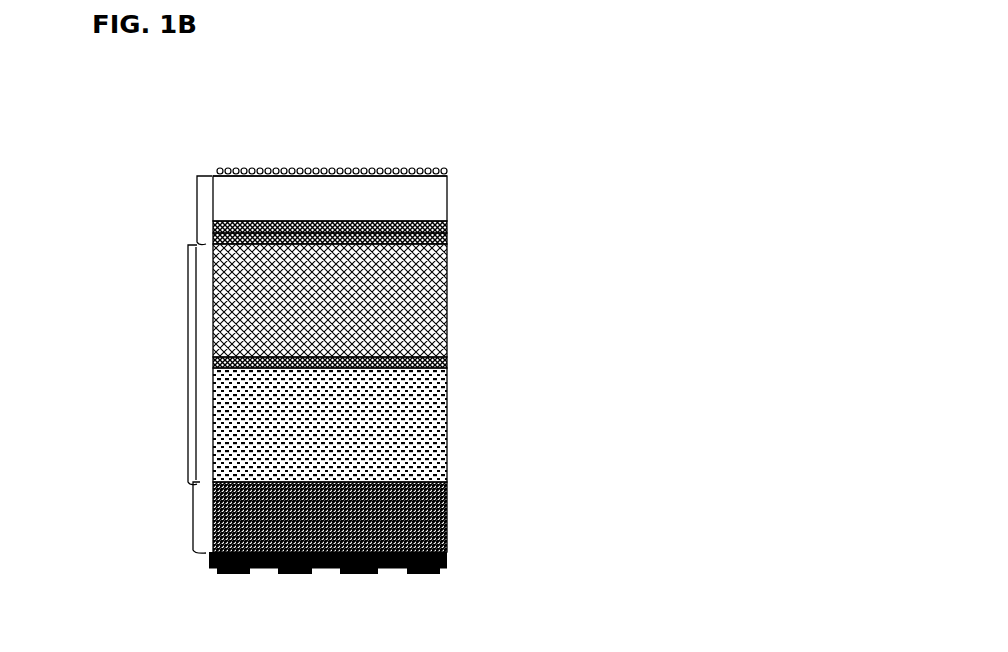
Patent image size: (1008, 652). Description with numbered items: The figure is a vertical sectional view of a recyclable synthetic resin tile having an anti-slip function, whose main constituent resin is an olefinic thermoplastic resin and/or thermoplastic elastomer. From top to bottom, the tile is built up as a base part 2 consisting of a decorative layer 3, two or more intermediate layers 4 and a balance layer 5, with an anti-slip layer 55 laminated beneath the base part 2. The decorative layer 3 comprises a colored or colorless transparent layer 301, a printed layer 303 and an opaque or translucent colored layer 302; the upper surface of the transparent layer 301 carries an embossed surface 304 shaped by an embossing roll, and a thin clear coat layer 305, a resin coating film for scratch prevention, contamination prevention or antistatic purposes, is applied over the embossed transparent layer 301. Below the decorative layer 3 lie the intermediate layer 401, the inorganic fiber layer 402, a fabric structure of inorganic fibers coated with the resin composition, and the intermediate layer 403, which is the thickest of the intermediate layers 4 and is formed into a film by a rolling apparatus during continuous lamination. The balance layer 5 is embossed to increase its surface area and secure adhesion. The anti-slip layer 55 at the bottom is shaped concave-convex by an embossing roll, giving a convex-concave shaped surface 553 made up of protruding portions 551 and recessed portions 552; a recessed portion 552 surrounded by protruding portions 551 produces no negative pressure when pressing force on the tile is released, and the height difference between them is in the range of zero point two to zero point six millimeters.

The base part 2 is at (193, 520).
The decorative layer 3 is at (197, 203).
The intermediate layers 4 is at (188, 367).
The balance layer 5 is at (450, 518).
The anti-slip layer 55 is at (450, 558).
The transparent layer 301 is at (450, 199).
The colored layer 302 is at (450, 238).
The printed layer 303 is at (450, 225).
The embossed surface 304 is at (455, 173).
The clear coat layer 305 is at (398, 166).
The intermediate layer 401 is at (450, 313).
The inorganic fiber layer 402 is at (450, 367).
The intermediate layer 403 is at (450, 440).
The protruding portion 551 is at (363, 576).
The recessed portion 552 is at (325, 571).
The convex-concave shaped surface 553 is at (448, 572).